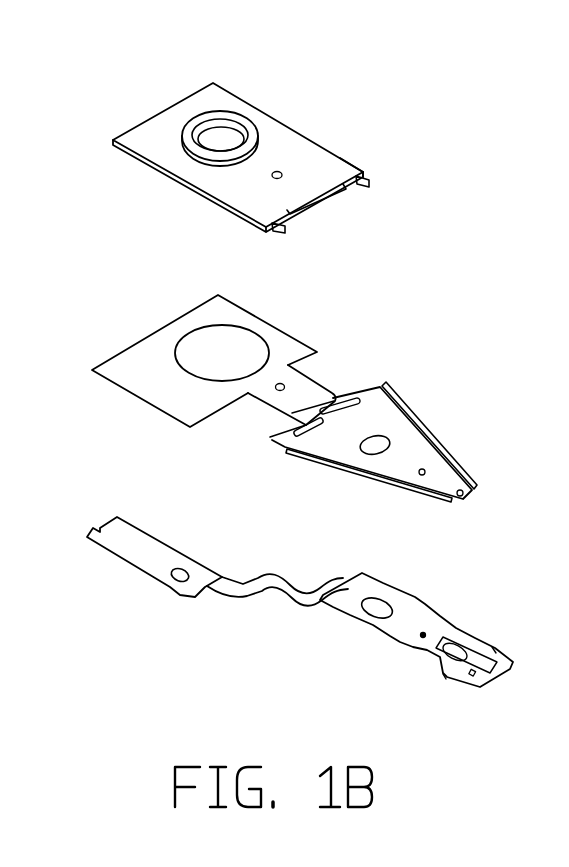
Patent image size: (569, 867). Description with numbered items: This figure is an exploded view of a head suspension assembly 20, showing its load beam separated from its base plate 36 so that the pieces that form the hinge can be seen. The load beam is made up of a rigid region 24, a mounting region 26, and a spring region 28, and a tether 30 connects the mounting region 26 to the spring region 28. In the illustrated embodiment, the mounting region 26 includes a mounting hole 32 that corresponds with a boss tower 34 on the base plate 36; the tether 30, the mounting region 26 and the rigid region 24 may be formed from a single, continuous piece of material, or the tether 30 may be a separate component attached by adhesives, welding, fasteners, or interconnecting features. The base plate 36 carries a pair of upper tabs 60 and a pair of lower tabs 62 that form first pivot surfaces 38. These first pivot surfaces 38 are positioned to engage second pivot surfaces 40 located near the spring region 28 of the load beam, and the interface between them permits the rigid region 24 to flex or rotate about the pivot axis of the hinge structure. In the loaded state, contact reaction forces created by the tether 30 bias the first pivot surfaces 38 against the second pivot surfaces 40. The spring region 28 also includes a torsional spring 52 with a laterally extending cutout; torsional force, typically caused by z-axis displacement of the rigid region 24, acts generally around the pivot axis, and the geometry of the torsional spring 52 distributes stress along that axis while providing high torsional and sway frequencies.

The head suspension assembly 20 is at (214, 652).
The rigid region 24 is at (410, 452).
The mounting region 26 is at (147, 368).
The spring region 28 is at (326, 374).
The tether 30 is at (288, 432).
The mounting hole 32 is at (200, 327).
The boss tower 34 is at (198, 156).
The base plate 36 is at (250, 107).
The first pivot surfaces 38 is at (384, 165).
The second pivot surfaces 40 is at (367, 388).
The torsional spring 52 is at (322, 420).
The upper tabs 60 is at (287, 228).
The lower tabs 62 is at (370, 188).